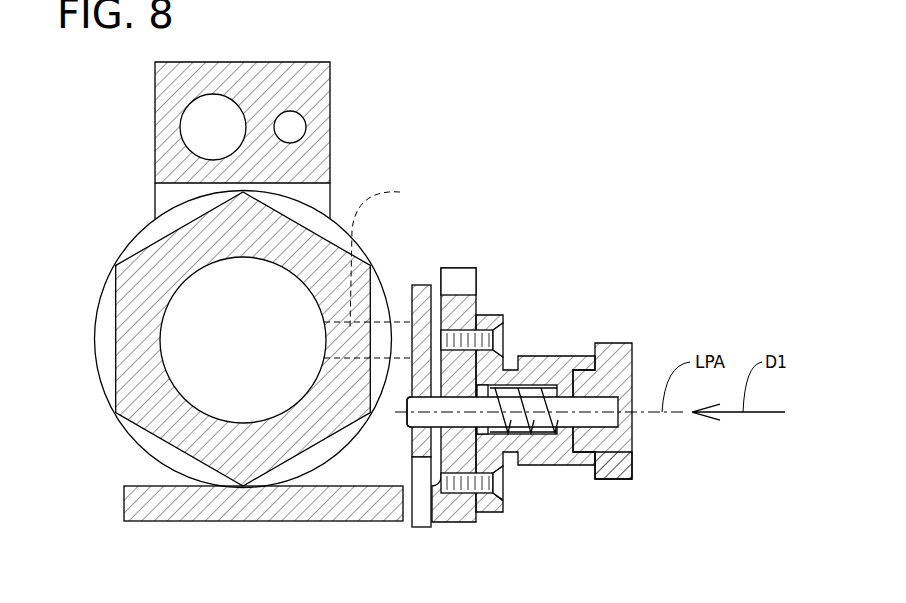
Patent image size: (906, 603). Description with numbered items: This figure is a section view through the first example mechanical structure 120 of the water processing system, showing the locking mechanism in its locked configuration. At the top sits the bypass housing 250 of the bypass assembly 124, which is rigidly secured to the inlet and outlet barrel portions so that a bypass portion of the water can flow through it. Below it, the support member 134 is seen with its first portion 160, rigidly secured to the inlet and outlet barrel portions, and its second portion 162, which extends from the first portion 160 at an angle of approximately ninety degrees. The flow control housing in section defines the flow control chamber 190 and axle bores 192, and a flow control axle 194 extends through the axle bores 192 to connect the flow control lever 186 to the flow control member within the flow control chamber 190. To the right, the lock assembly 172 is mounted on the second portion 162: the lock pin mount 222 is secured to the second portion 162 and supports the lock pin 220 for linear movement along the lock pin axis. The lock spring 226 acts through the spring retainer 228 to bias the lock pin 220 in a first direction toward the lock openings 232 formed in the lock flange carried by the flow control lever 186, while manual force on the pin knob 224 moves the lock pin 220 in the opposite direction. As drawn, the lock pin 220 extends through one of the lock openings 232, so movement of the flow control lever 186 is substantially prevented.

The mechanical structure 120 is at (486, 173).
The bypass assembly 124 is at (278, 121).
The support member 134 is at (234, 527).
The first portion 160 is at (180, 508).
The second portion 162 is at (465, 310).
The lock assembly 172 is at (634, 343).
The flow control lever 186 is at (422, 285).
The flow control chamber 190 is at (256, 348).
The axle bores 192 is at (390, 255).
The flow control axle 194 is at (403, 325).
The lock pin 220 is at (602, 418).
The lock pin mount 222 is at (492, 368).
The pin knob 224 is at (615, 468).
The lock spring 226 is at (525, 400).
The spring retainer 228 is at (483, 432).
The lock openings 232 is at (410, 430).
The bypass housing 250 is at (316, 100).